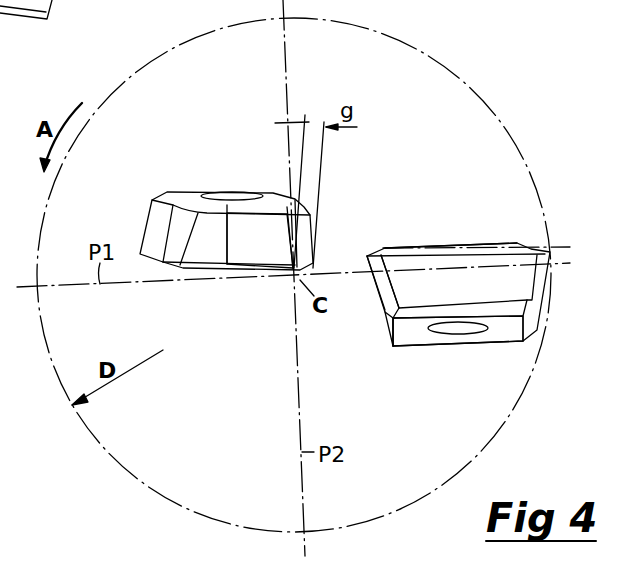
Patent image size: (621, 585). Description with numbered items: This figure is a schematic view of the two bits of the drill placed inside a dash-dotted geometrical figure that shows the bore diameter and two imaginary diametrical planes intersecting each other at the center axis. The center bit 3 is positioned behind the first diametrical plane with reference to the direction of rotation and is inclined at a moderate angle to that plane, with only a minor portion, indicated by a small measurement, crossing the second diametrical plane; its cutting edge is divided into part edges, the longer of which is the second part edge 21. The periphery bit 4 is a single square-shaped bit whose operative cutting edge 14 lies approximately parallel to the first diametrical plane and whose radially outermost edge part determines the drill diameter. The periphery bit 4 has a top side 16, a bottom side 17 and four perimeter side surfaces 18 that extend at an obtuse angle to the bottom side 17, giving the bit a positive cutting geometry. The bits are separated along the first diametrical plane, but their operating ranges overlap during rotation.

The center bit 3 is at (180, 188).
The second part edge 21 is at (255, 263).
The periphery bit 4 is at (485, 352).
The cutting edge 14 is at (466, 190).
The top side 16 is at (364, 264).
The perimeter side surface 18 is at (371, 309).
The bottom side 17 is at (416, 339).